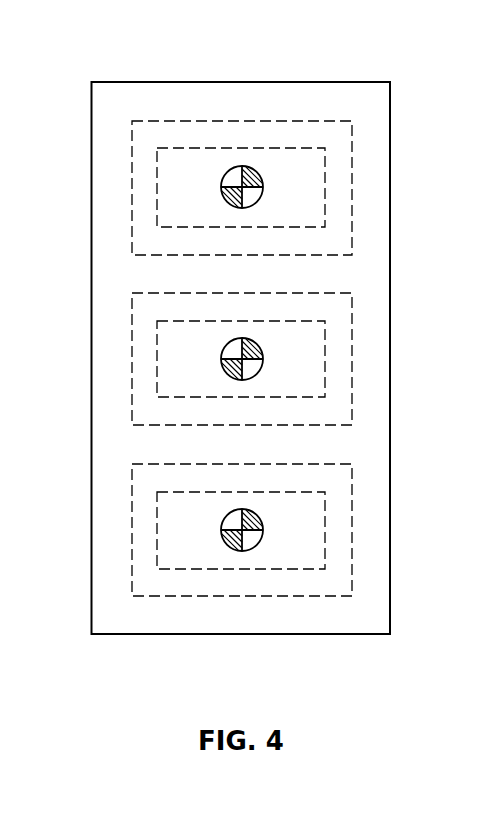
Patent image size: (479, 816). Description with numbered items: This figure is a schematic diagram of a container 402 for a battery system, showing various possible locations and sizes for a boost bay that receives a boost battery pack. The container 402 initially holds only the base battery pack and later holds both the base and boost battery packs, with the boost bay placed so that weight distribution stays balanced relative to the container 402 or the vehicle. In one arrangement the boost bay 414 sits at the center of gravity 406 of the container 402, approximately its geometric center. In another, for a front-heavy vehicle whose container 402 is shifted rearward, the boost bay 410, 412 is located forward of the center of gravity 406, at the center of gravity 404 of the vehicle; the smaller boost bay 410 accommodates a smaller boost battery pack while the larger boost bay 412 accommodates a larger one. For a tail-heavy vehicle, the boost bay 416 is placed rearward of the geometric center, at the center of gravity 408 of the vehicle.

The container 402 is at (91, 603).
The center of gravity of the vehicle 404 is at (263, 187).
The center of gravity of the container 406 is at (263, 359).
The center of gravity of the vehicle 408 is at (263, 530).
The smaller boost bay 410 is at (325, 157).
The larger boost bay 412 is at (273, 121).
The boost bay 414 is at (325, 338).
The boost bay 416 is at (325, 509).